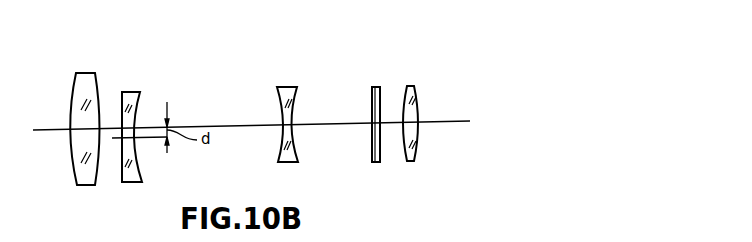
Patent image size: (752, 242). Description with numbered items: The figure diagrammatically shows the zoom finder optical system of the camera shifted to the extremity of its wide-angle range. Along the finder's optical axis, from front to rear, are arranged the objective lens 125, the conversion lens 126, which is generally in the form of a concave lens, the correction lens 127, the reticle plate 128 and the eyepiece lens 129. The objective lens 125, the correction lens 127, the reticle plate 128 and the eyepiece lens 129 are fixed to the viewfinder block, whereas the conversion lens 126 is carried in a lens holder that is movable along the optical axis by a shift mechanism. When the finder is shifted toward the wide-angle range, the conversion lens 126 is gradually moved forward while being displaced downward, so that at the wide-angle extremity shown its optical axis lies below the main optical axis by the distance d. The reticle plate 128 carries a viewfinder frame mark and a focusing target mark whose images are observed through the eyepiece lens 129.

The objective lens 125 is at (88, 72).
The conversion lens 126 is at (133, 91).
The correction lens 127 is at (289, 86).
The reticle plate 128 is at (376, 86).
The eyepiece lens 129 is at (418, 96).